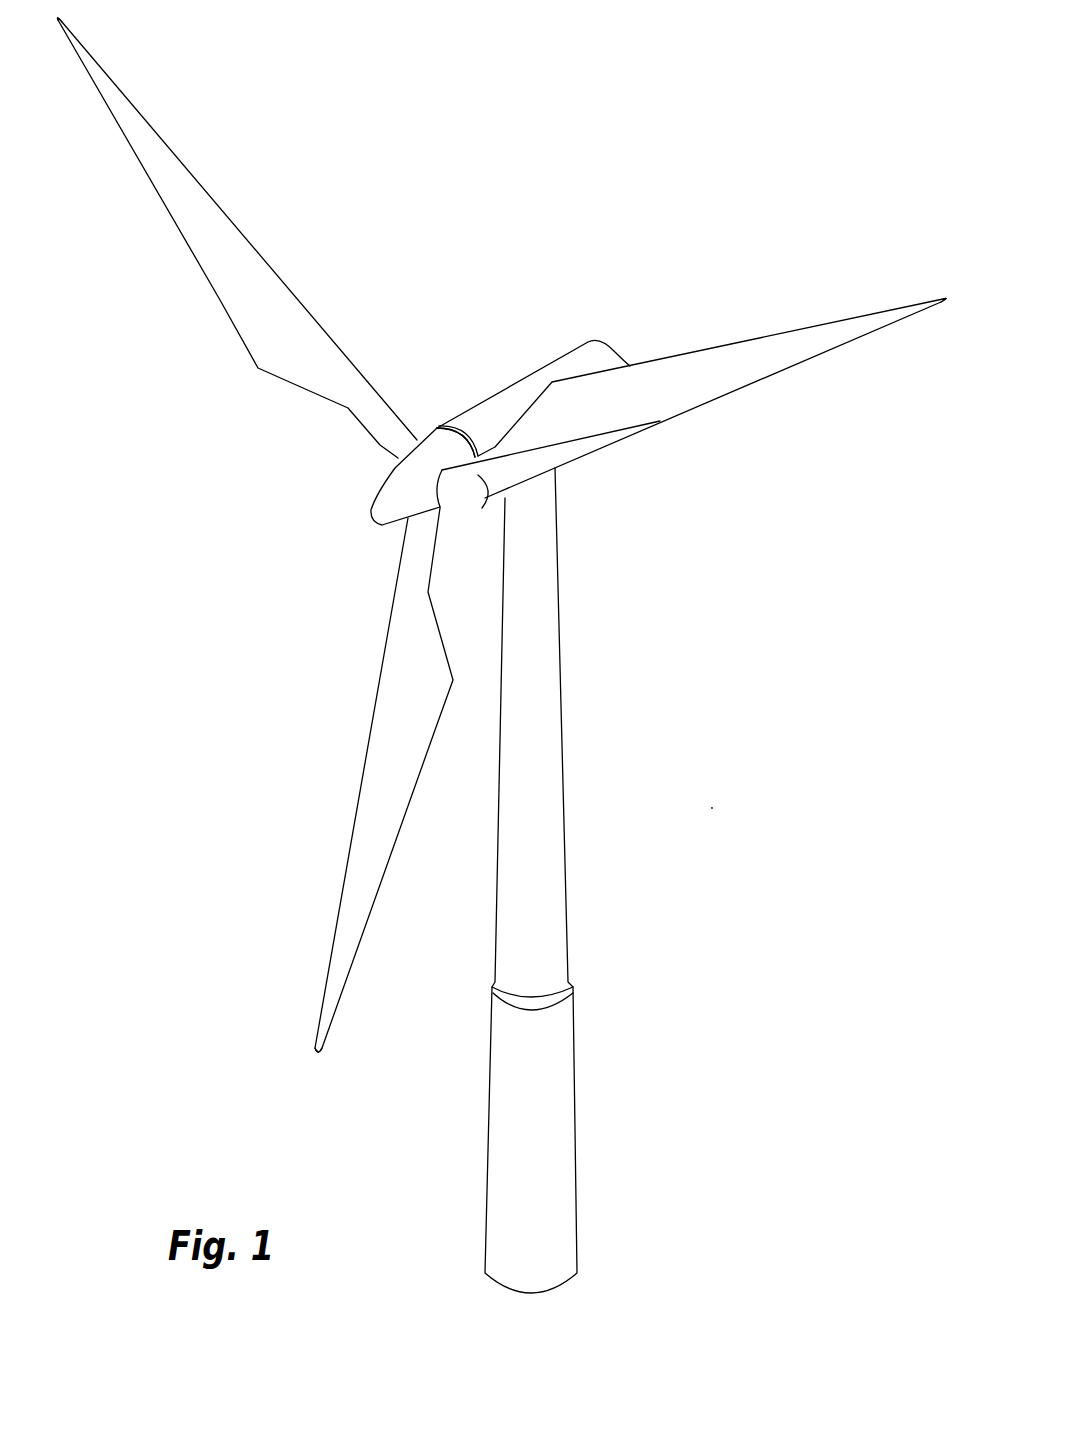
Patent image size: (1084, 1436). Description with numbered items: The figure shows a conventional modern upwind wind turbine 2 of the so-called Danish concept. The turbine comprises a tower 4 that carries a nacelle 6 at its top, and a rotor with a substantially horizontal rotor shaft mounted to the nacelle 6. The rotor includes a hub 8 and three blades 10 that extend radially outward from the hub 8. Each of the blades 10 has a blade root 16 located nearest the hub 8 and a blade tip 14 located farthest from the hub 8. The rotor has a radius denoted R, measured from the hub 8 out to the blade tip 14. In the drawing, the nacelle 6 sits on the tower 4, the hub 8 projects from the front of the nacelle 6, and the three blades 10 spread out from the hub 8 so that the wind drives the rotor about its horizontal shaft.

The wind turbine 2 is at (678, 812).
The tower 4 is at (550, 730).
The nacelle 6 is at (493, 410).
The hub 8 is at (393, 498).
The blades 10 is at (270, 338).
The blade tip 14 is at (107, 78).
The blade root 16 is at (402, 450).